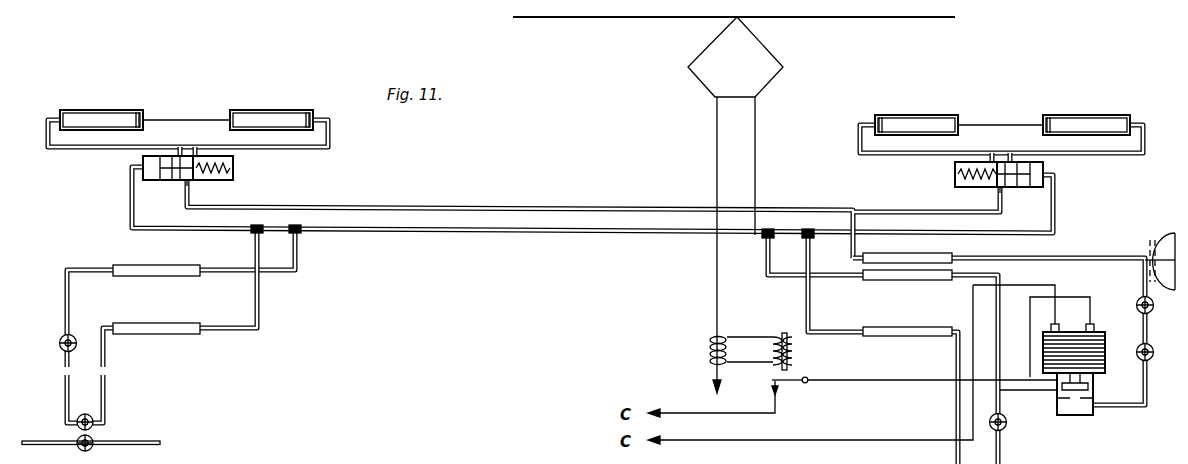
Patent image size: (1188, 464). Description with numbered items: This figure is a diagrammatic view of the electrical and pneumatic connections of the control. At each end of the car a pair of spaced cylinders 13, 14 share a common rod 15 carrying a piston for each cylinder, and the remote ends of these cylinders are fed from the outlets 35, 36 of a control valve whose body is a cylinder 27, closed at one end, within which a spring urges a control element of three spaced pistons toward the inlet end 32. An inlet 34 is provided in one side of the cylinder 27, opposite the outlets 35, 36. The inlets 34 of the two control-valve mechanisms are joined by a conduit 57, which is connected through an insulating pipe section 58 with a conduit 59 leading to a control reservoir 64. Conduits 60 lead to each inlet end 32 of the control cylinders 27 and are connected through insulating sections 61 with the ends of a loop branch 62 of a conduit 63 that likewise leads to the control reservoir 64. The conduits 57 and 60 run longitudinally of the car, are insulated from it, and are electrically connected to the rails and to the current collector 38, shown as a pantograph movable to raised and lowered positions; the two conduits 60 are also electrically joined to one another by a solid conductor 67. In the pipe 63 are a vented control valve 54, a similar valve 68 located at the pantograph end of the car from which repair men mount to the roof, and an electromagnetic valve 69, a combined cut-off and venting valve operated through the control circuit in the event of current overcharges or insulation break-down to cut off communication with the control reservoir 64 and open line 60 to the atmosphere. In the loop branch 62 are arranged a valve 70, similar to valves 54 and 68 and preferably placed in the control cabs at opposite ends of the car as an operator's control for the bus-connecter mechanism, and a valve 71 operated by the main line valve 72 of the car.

The cylinder 13 is at (288, 110).
The cylinder 14 is at (97, 110).
The common rod 15 is at (181, 120).
The cylinder 27 is at (233, 167).
The inlet end 32 is at (143, 163).
The inlet 34 is at (189, 186).
The outlet 35 is at (195, 150).
The outlet 36 is at (180, 147).
The current collector 38 is at (692, 75).
The vented control valve 54 is at (1137, 302).
The conduit 57 is at (600, 206).
The insulating pipe section 58 is at (900, 256).
The conduit 59 is at (1065, 258).
The conduit 60 is at (132, 223).
The insulating section 61 is at (173, 277).
The loop branch 62 is at (65, 390).
The conduit 63 is at (1118, 410).
The control reservoir 64 is at (1165, 235).
The solid conductor 67 is at (280, 226).
The valve 68 is at (1137, 349).
The electromagnetic valve 69 is at (1073, 342).
The valve 70 is at (60, 338).
The valve 71 is at (95, 418).
The main line valve 72 is at (100, 441).